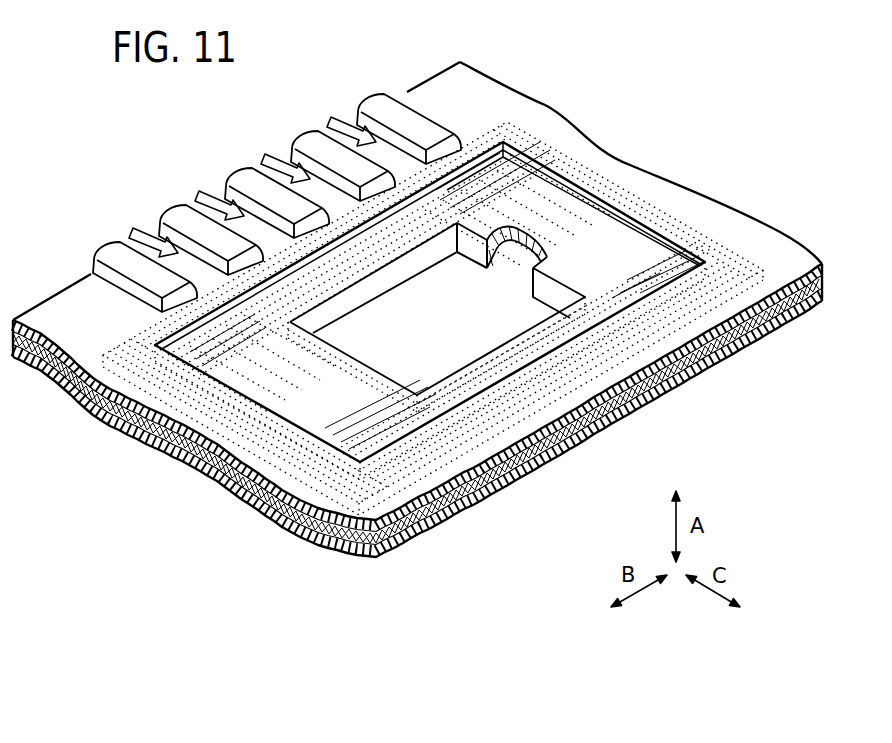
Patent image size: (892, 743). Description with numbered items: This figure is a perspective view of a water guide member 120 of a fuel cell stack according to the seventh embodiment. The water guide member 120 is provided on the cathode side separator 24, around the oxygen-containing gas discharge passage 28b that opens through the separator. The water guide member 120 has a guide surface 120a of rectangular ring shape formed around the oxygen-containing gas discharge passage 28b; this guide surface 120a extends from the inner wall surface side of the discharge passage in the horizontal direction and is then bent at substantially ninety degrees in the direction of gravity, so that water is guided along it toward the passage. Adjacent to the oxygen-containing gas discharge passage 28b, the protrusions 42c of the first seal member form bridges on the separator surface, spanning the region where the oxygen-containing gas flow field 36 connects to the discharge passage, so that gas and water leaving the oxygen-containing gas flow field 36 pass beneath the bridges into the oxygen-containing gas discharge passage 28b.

The cathode side separator 24 is at (166, 110).
The protrusions 42c is at (386, 96).
The oxygen-containing gas flow field 36 is at (142, 232).
The water guide member 120 is at (492, 208).
The guide surface 120a is at (637, 277).
The oxygen-containing gas discharge passage 28b is at (527, 318).